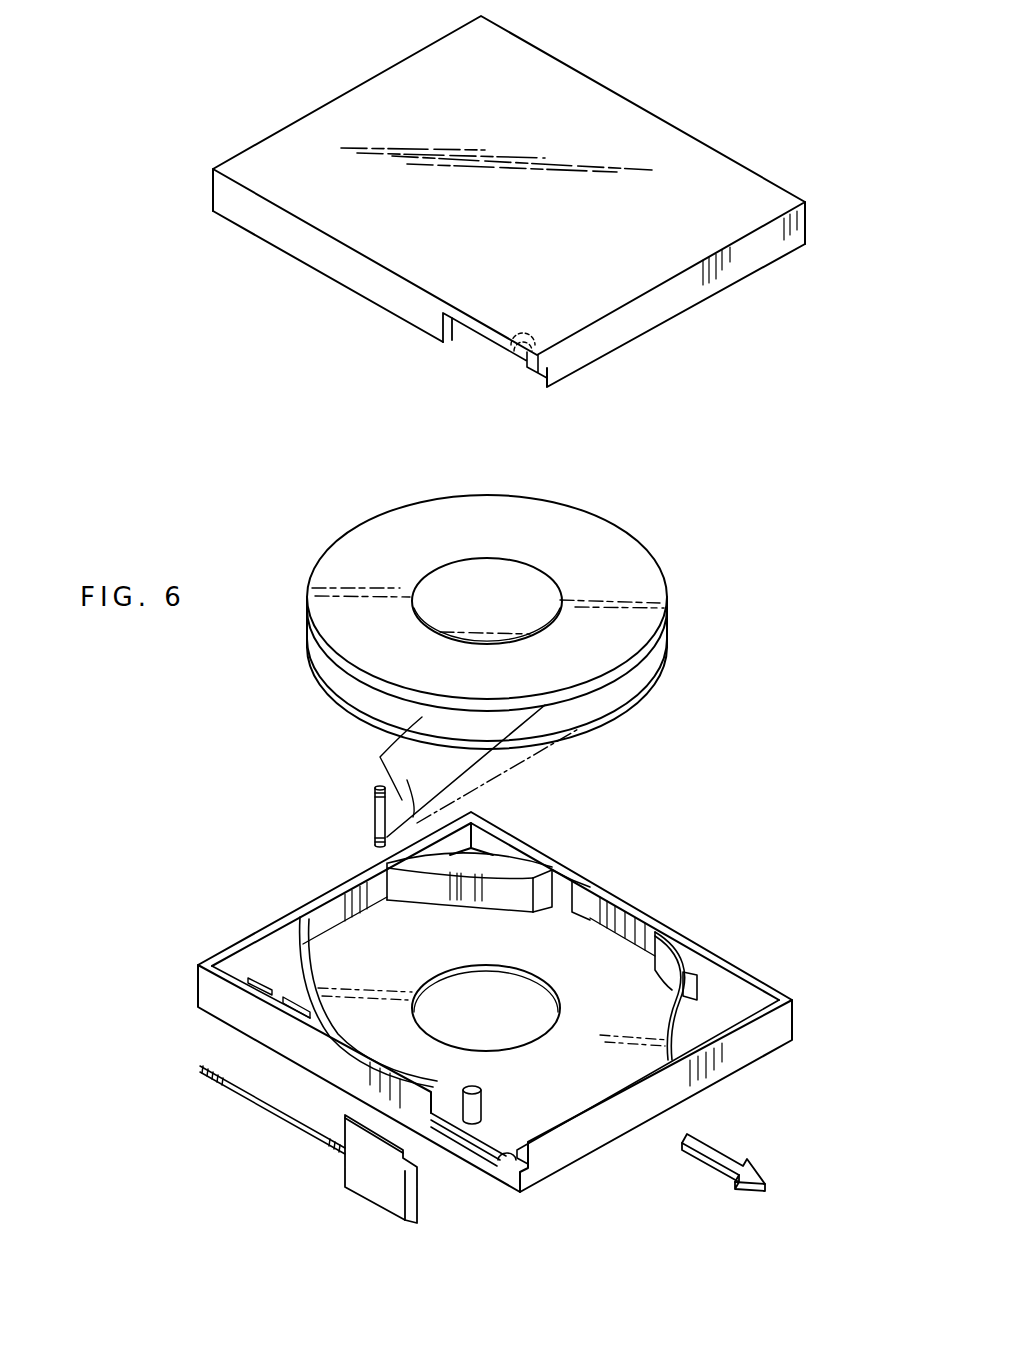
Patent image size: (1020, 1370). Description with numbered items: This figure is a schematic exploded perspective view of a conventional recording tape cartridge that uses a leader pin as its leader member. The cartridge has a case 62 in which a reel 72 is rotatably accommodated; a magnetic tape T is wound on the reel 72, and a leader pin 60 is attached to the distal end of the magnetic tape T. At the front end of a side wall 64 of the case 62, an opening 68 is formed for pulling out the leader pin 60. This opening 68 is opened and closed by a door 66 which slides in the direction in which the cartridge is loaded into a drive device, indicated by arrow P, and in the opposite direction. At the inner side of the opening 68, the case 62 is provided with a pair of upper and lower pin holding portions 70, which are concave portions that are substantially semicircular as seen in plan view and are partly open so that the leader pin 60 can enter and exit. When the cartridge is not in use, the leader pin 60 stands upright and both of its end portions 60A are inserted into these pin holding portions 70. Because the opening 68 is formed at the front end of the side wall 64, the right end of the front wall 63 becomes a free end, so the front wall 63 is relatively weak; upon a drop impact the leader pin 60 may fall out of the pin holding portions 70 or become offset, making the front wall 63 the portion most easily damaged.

The case 62 is at (706, 141).
The front wall 63 is at (642, 322).
The side wall 64 is at (357, 272).
The door 66 is at (377, 1180).
The opening 68 is at (473, 330).
The pin holding portions 70 is at (512, 352).
The reel 72 is at (616, 521).
The leader pin 60 is at (334, 815).
The end portions 60A is at (375, 790).
The magnetic tape T is at (472, 771).
The arrow P is at (736, 1169).